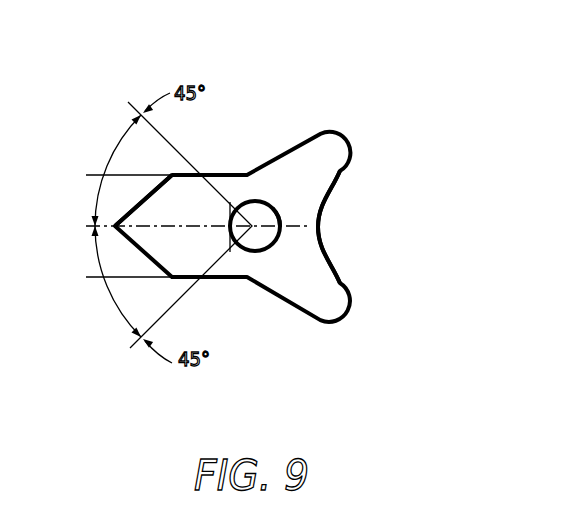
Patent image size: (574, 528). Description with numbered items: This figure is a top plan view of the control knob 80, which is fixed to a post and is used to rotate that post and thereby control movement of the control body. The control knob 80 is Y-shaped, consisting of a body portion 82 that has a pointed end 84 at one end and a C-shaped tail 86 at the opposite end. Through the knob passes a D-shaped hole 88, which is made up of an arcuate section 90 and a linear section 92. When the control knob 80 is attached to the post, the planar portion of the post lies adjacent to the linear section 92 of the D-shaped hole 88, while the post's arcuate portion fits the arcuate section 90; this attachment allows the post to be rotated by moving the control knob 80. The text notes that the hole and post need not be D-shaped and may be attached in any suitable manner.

The control knob 80 is at (235, 138).
The body portion 82 is at (217, 255).
The pointed end 84 is at (135, 193).
The C-shaped tail 86 is at (304, 201).
The D-shaped hole 88 is at (259, 183).
The arcuate section 90 is at (268, 200).
The linear section 92 is at (223, 227).